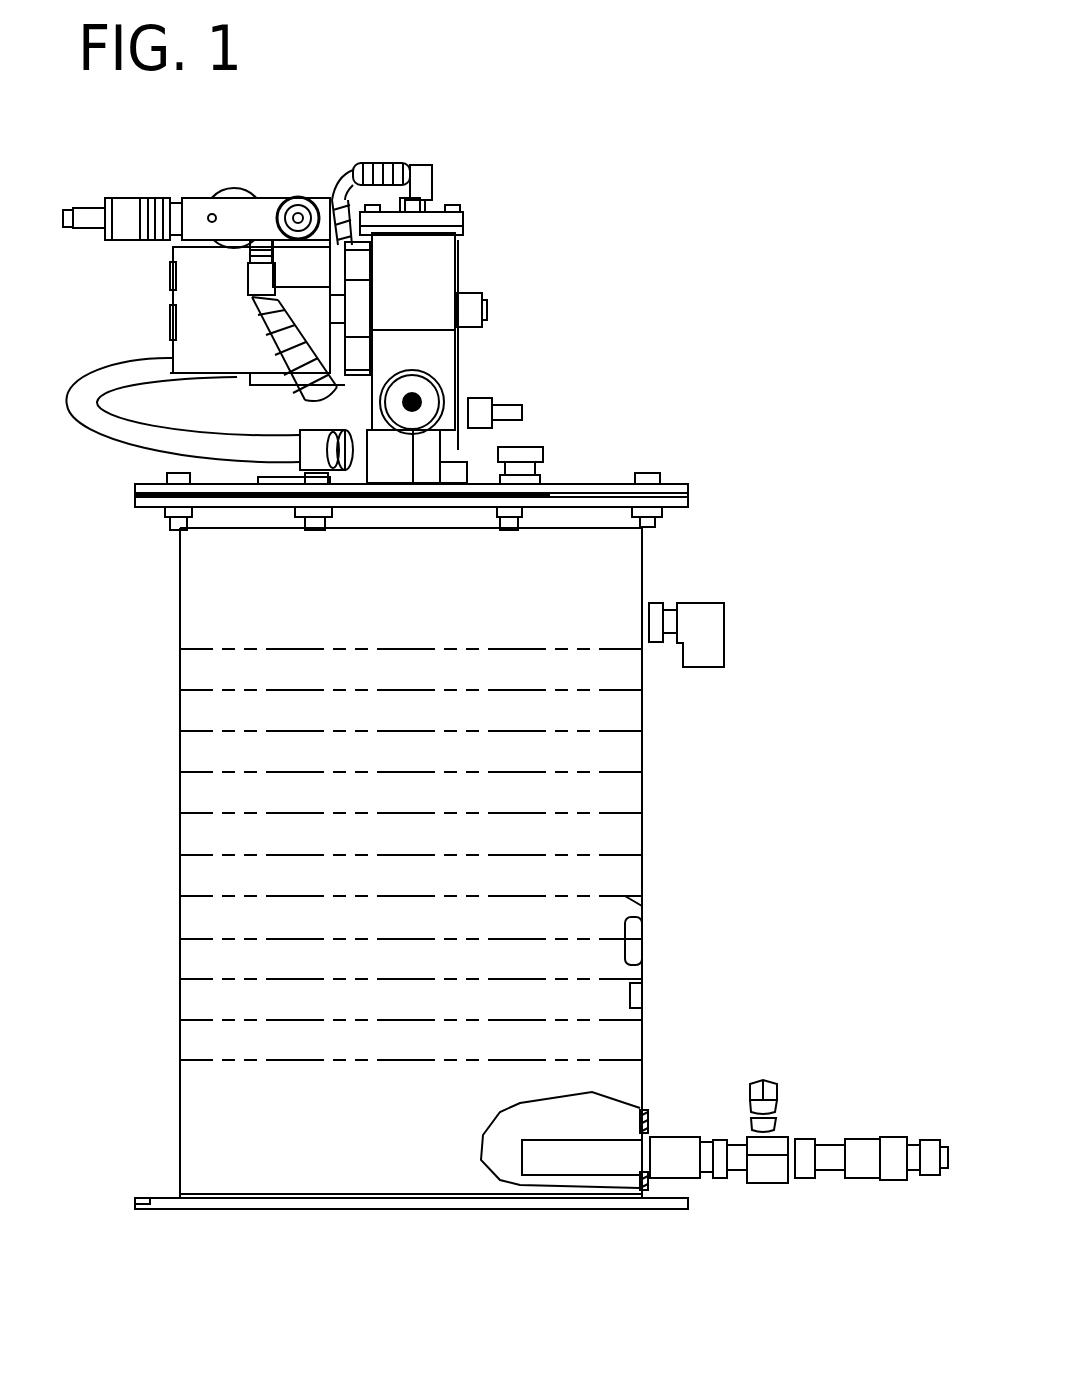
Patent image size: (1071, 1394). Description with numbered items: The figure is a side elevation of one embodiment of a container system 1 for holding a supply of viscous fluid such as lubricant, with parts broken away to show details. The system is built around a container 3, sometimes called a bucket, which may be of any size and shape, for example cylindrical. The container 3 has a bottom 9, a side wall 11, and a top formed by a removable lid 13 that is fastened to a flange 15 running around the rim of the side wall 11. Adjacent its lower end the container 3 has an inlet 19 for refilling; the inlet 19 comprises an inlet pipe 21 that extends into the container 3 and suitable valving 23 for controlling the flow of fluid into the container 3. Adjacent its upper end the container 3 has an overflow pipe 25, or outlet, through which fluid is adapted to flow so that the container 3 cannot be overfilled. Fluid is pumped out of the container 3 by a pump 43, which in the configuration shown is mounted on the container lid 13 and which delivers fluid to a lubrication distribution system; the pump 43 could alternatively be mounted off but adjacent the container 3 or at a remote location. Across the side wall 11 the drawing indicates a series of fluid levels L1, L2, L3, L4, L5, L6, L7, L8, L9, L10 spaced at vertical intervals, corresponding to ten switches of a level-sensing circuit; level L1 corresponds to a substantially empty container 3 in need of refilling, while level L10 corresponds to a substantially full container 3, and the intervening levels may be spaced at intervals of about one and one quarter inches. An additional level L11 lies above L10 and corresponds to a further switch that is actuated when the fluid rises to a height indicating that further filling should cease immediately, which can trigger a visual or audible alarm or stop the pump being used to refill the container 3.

The container system 1 is at (727, 157).
The container 3 is at (280, 580).
The bottom 9 is at (235, 1190).
The side wall 11 is at (645, 830).
The removable lid 13 is at (672, 490).
The flange 15 is at (670, 502).
The inlet 19 is at (652, 1143).
The inlet pipe 21 is at (585, 1163).
The valving 23 is at (797, 1115).
The overflow pipe 25 is at (708, 620).
The pump 43 is at (478, 264).
The level L1 is at (190, 1060).
The level L2 is at (200, 1018).
The level L3 is at (625, 978).
The level L4 is at (195, 940).
The level L5 is at (625, 898).
The level L6 is at (625, 855).
The level L7 is at (193, 815).
The level L8 is at (200, 772).
The level L9 is at (625, 733).
The level L10 is at (625, 690).
The level L11 is at (193, 647).